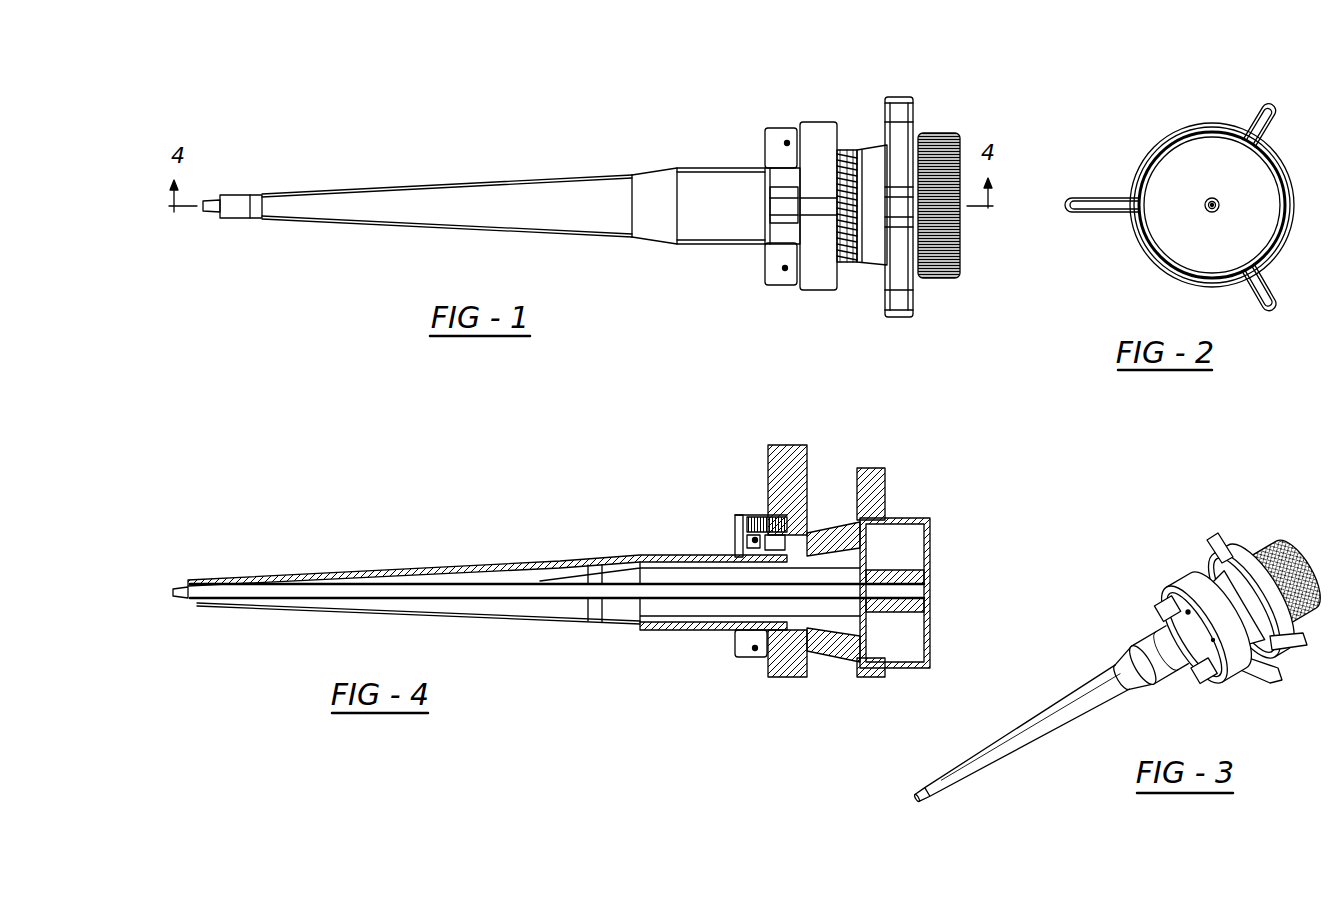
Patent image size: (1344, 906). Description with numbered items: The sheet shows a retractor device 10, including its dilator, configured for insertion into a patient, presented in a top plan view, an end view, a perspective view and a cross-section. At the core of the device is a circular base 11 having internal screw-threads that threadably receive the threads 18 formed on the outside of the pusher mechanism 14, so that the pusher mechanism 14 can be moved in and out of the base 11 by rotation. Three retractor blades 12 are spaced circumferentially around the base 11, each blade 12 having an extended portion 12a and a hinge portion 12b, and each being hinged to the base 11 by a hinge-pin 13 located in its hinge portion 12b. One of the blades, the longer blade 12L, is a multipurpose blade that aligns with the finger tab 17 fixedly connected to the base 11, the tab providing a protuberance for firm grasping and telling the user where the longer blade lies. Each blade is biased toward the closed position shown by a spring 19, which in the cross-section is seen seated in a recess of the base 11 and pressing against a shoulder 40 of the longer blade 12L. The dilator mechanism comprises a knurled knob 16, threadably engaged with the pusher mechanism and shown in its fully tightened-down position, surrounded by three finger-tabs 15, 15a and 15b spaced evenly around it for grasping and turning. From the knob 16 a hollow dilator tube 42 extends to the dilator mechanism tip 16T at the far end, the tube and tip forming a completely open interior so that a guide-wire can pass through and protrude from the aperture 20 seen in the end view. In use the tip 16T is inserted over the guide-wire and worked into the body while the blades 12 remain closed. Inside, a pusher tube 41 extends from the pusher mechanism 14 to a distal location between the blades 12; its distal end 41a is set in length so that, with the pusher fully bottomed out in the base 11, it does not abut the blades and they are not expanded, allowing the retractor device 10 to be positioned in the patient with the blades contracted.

In FIG. 1, the retractor device 10 is at (603, 74).
In FIG. 1, the base 11 is at (818, 122).
In FIG. 3, the base 11 is at (1180, 580).
In FIG. 4, the base 11 is at (790, 677).
In FIG. 1, the retractor blades 12 is at (470, 183).
In FIG. 3, the retractor blades 12 is at (1033, 713).
In FIG. 1, the extended portion 12a is at (632, 169).
In FIG. 1, the hinge portion 12b is at (776, 112).
In FIG. 3, the longer blade 12L is at (1028, 753).
In FIG. 4, the longer blade 12L is at (388, 569).
In FIG. 1, the hinge-pin 13 is at (784, 143).
In FIG. 3, the hinge-pin 13 is at (1186, 612).
In FIG. 4, the hinge-pin 13 is at (748, 540).
In FIG. 1, the pusher mechanism 14 is at (865, 150).
In FIG. 4, the pusher mechanism 14 is at (843, 530).
In FIG. 1, the knob finger tabs 15 is at (906, 98).
In FIG. 2, the knob finger tabs 15 is at (1271, 102).
In FIG. 2, the finger-tab 15a is at (1277, 296).
In FIG. 2, the finger-tab 15b is at (1112, 197).
In FIG. 3, the finger-tab 15b is at (1303, 650).
In FIG. 4, the finger-tab 15b is at (885, 470).
In FIG. 1, the dilator mechanism knurled knob 16 is at (942, 133).
In FIG. 2, the dilator mechanism knurled knob 16 is at (1208, 150).
In FIG. 3, the dilator mechanism knurled knob 16 is at (1276, 560).
In FIG. 4, the dilator mechanism knurled knob 16 is at (926, 518).
In FIG. 1, the dilator mechanism tip 16T is at (207, 200).
In FIG. 4, the dilator mechanism tip 16T is at (176, 597).
In FIG. 1, the finger tab 17 is at (822, 198).
In FIG. 2, the finger tab 17 is at (1076, 212).
In FIG. 3, the finger tab 17 is at (1275, 683).
In FIG. 4, the finger tab 17 is at (788, 445).
In FIG. 1, the threads 18 is at (846, 263).
In FIG. 1, the spring 19 is at (765, 207).
In FIG. 4, the spring 19 is at (757, 517).
In FIG. 2, the aperture 20 is at (1218, 200).
In FIG. 4, the shoulder 40 is at (745, 538).
In FIG. 4, the pusher tube 41 is at (700, 610).
In FIG. 4, the distal end 41a is at (627, 630).
In FIG. 4, the dilator tube 42 is at (500, 600).